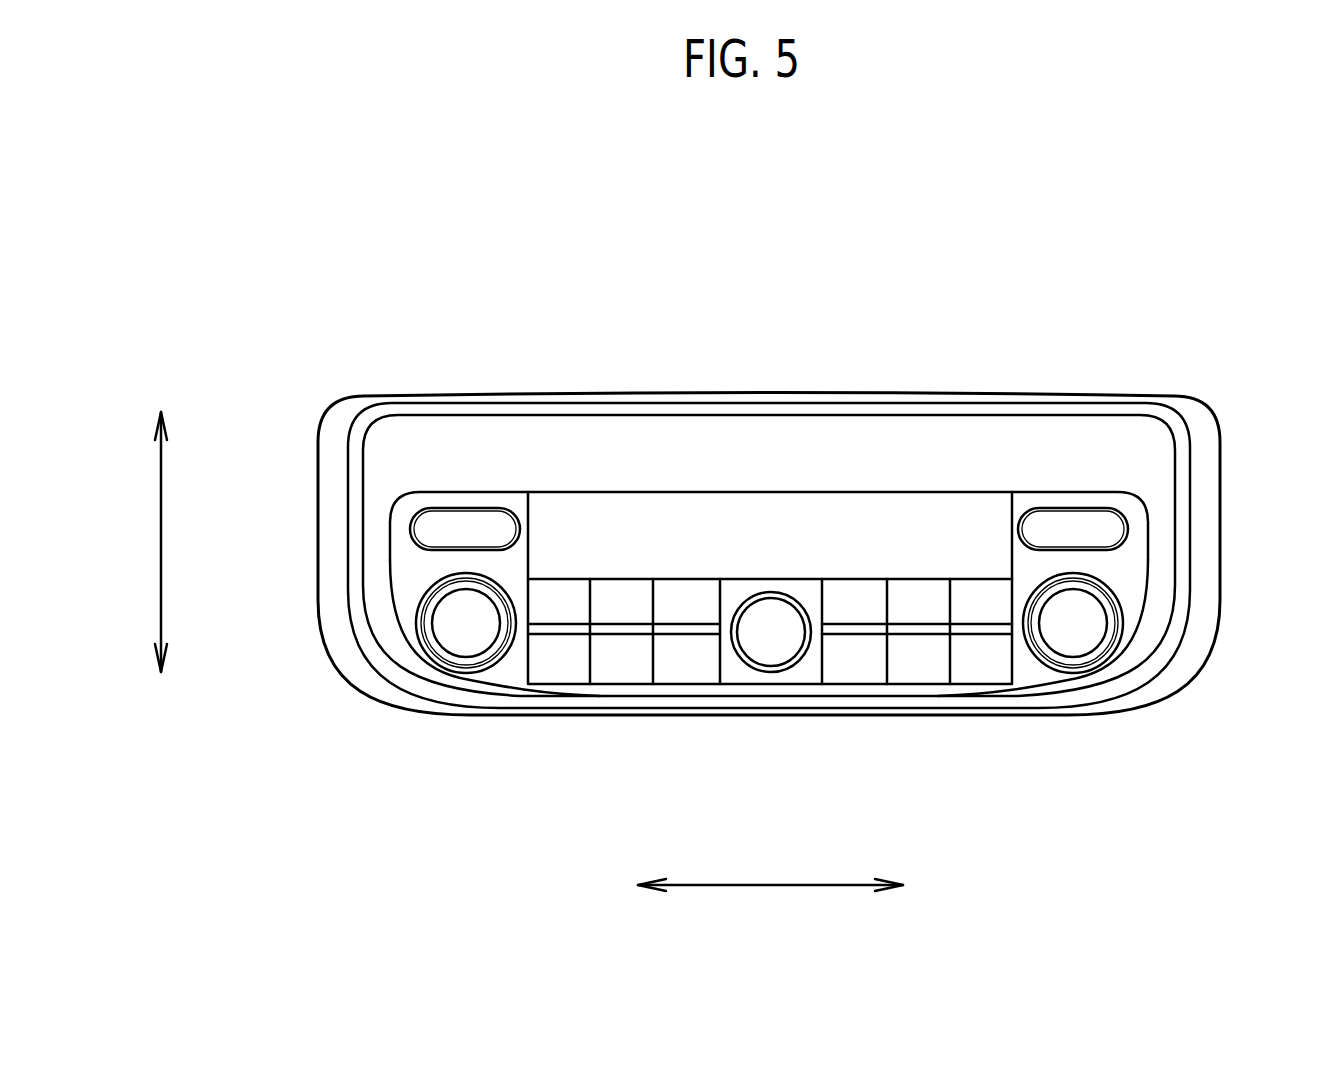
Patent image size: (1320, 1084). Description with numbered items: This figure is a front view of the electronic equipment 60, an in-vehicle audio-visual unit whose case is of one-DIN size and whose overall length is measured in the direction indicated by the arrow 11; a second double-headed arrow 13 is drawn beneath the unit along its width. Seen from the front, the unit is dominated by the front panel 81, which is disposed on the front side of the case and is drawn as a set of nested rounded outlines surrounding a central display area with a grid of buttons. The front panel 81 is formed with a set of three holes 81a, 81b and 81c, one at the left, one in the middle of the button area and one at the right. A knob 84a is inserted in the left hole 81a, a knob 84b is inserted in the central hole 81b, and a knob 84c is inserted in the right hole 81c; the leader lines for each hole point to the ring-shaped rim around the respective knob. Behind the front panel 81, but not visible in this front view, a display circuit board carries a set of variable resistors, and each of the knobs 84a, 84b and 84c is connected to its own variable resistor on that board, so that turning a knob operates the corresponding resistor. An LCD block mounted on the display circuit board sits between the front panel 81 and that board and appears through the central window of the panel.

The electronic equipment 60 is at (1062, 250).
The arrow 11 is at (161, 465).
The lateral direction 13 is at (770, 887).
The front panel 81 is at (1192, 653).
The hole 81a is at (455, 677).
The hole 81b is at (740, 662).
The hole 81c is at (1038, 660).
The knob 84a is at (478, 638).
The knob 84b is at (780, 642).
The knob 84c is at (1087, 640).